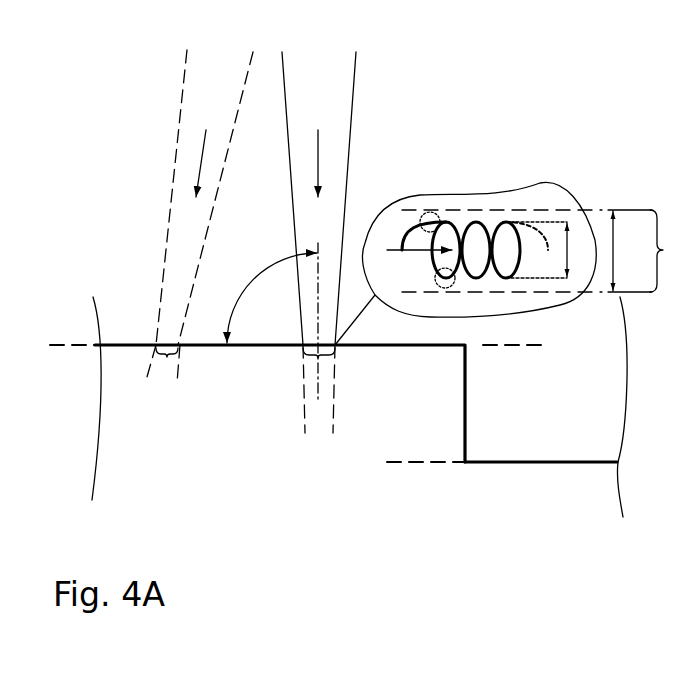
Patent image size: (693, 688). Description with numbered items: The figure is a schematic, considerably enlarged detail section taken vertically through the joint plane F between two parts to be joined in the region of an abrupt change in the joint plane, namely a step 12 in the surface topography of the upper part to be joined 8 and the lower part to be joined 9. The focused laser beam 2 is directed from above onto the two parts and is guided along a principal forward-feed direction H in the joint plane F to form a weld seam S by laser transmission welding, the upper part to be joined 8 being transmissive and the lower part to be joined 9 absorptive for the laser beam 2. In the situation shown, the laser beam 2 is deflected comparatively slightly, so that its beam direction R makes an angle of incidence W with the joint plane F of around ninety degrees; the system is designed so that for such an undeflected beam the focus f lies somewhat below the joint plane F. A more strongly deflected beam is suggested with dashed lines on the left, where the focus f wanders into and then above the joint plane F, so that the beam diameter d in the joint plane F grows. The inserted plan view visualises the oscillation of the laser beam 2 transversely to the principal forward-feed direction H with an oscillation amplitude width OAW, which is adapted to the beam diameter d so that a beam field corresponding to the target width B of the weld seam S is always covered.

The focused laser beam 2 is at (178, 124).
The beam direction R is at (201, 163).
The principal forward-feed direction H is at (428, 253).
The oscillation amplitude width OAW is at (548, 250).
The target width B is at (630, 251).
The weld seam S is at (666, 251).
The angle of incidence W is at (269, 298).
The focus f is at (170, 332).
The beam diameter d is at (245, 368).
The joint plane F is at (515, 345).
The step 12 is at (465, 430).
The lower part to be joined 9 is at (540, 490).
The upper part to be joined 8 is at (587, 417).